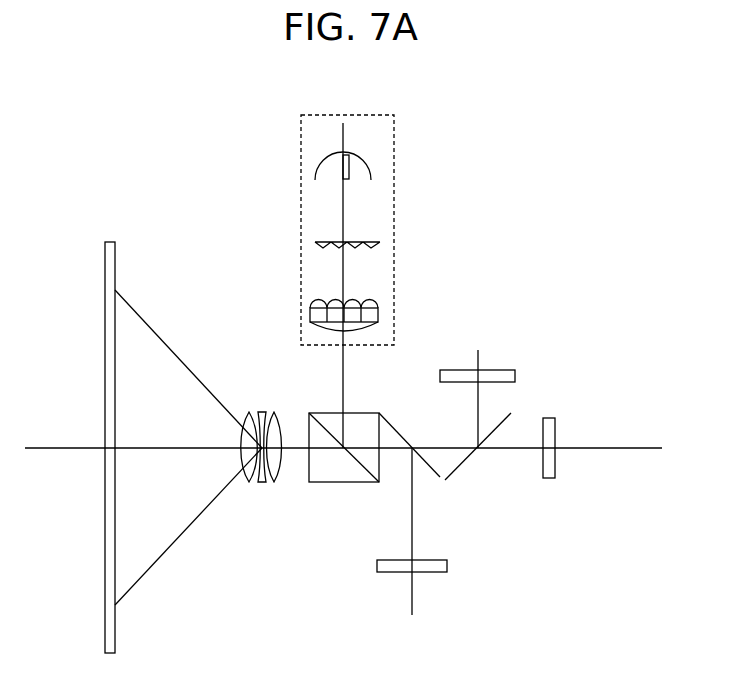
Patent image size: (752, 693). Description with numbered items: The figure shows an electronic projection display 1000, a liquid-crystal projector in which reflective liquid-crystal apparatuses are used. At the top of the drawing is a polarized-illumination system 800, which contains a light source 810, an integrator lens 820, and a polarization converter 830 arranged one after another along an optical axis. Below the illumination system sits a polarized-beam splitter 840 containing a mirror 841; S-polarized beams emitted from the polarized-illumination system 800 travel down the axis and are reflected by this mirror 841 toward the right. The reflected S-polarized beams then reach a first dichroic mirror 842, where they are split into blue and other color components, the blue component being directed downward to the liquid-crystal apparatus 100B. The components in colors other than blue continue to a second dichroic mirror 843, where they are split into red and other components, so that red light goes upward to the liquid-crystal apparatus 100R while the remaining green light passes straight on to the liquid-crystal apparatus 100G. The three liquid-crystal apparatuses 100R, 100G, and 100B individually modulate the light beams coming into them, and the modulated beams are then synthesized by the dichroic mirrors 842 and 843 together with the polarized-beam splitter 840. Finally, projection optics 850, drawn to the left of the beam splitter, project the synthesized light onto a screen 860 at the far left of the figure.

The electronic projection display 1000 is at (598, 418).
The polarized-illumination system 800 is at (385, 145).
The light source 810 is at (372, 162).
The integrator lens 820 is at (372, 240).
The polarization converter 830 is at (380, 308).
The polarized-beam splitter 840 is at (318, 481).
The mirror 841 is at (357, 479).
The dichroic mirror 842 is at (436, 475).
The dichroic mirror 843 is at (468, 462).
The projection optics 850 is at (282, 407).
The screen 860 is at (110, 630).
The liquid-crystal apparatus for red 100R is at (502, 372).
The liquid-crystal apparatus for green 100G is at (553, 465).
The liquid-crystal apparatus for blue 100B is at (390, 572).